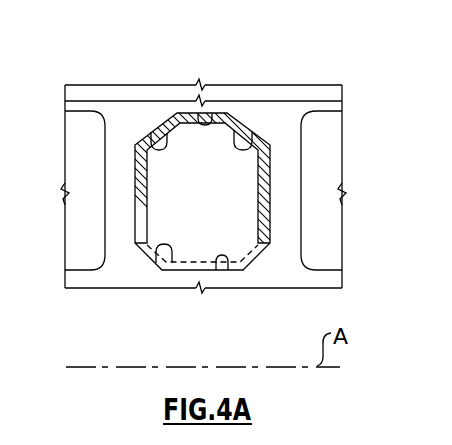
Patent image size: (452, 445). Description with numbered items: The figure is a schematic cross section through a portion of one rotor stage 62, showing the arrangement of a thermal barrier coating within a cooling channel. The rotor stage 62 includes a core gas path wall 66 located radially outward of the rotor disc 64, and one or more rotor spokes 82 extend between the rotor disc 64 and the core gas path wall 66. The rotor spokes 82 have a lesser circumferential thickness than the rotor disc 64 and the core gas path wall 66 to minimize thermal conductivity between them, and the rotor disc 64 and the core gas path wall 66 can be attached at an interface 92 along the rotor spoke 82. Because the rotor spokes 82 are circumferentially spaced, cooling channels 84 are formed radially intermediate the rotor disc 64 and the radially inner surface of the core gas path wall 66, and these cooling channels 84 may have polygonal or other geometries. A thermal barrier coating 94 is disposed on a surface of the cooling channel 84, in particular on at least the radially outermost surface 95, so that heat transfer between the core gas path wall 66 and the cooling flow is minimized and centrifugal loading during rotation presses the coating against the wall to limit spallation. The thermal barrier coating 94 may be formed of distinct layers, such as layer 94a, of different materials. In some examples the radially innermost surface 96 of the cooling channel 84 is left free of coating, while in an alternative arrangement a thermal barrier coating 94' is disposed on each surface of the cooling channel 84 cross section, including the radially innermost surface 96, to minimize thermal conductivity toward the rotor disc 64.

The rotor stage 62 is at (353, 67).
The rotor disc 64 is at (328, 281).
The core gas path wall 66 is at (332, 97).
The rotor spoke 82 is at (283, 171).
The cooling channel 84 is at (133, 193).
The interface 92 is at (127, 193).
The thermal barrier coating 94 is at (232, 161).
The layer 94a is at (153, 147).
The thermal barrier coating 94' is at (173, 292).
The radially outermost surface 95 is at (207, 117).
The radially innermost surface 96 is at (227, 258).